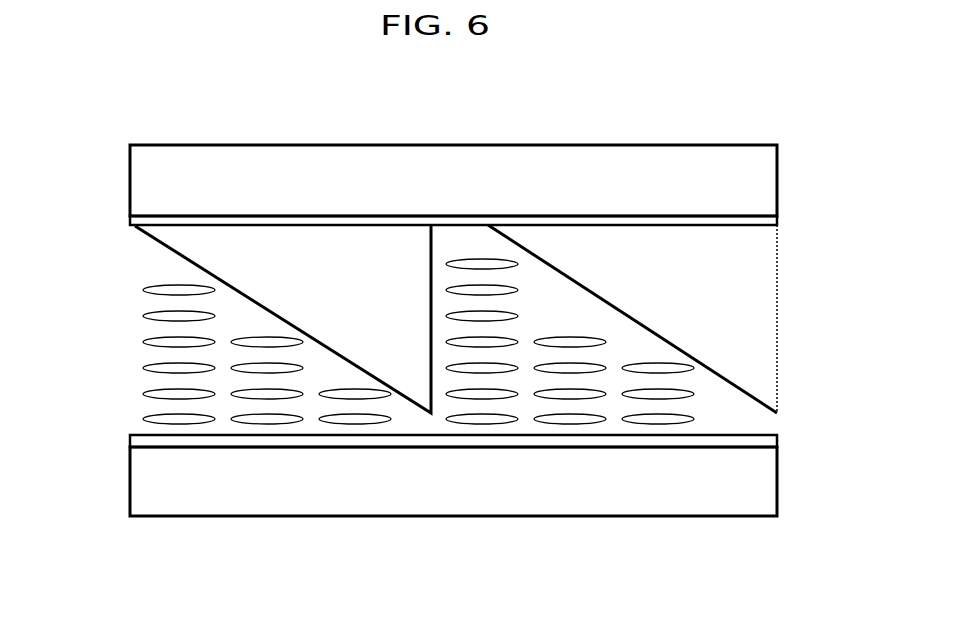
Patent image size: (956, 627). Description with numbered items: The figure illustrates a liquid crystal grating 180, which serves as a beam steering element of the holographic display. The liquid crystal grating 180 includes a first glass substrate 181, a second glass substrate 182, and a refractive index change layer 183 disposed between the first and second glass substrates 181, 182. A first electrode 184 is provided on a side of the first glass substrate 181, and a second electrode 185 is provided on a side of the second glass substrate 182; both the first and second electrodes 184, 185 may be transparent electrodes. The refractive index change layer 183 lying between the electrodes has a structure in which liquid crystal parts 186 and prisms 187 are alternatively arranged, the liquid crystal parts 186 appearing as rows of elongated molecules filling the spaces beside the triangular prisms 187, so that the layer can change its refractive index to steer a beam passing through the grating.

The liquid crystal grating 180 is at (101, 173).
The first glass substrate 181 is at (772, 481).
The second glass substrate 182 is at (772, 180).
The refractive index change layer 183 is at (783, 297).
The first electrode 184 is at (772, 441).
The second electrode 185 is at (773, 221).
The liquid crystal parts 186 is at (683, 393).
The prisms 187 is at (765, 350).